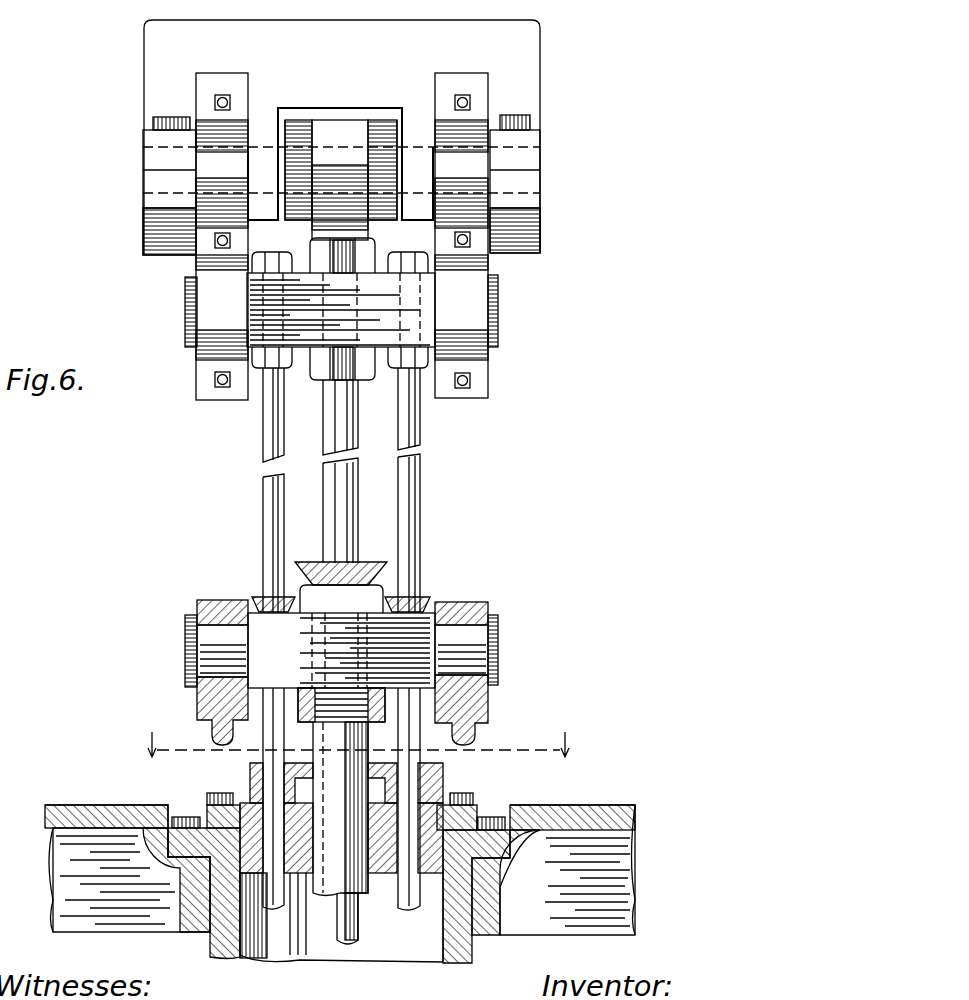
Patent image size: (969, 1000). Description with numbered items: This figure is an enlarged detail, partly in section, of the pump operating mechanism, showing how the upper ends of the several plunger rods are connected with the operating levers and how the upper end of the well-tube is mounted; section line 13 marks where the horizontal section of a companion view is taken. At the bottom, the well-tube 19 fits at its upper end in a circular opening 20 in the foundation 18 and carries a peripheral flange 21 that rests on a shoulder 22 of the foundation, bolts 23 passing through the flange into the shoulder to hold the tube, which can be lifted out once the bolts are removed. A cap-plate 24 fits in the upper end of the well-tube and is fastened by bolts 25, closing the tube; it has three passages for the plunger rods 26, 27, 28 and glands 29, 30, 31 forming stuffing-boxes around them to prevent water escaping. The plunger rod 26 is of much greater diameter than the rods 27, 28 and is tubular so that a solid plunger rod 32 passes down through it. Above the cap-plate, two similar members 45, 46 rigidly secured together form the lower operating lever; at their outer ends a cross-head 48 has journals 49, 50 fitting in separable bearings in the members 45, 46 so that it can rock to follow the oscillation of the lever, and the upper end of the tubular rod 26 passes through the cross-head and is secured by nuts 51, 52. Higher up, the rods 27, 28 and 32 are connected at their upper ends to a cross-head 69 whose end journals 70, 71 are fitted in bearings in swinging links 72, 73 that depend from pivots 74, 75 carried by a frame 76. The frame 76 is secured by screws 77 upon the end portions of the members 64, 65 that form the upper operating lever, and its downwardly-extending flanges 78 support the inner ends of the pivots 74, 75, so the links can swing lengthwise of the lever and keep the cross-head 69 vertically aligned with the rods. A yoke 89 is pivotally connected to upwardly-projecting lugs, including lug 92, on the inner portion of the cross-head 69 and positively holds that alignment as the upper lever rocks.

The section line 13- 13 is at (363, 749).
The foundation 18 is at (622, 815).
The well-tube 19 is at (423, 942).
The circular opening 20 is at (470, 935).
The peripheral flange 21 is at (488, 818).
The shoulder 22 is at (185, 870).
The bolts 23 is at (180, 817).
The cap-plate 24 is at (445, 810).
The bolts 25 is at (215, 793).
The tubular plunger rod 26 is at (352, 895).
The plunger rod 27 is at (272, 540).
The plunger rod 28 is at (418, 522).
The gland 29 is at (378, 770).
The gland 30 is at (290, 770).
The gland 31 is at (432, 770).
The solid plunger rod 32 is at (355, 505).
The lever member 45 is at (480, 710).
The lever member 46 is at (215, 707).
The cross-head 48 is at (412, 630).
The journal 49 is at (463, 634).
The journal 50 is at (215, 635).
The nut 51 is at (373, 590).
The nut 52 is at (392, 695).
The upper lever member 64 is at (527, 181).
The upper lever member 65 is at (156, 188).
The cross-head 69 is at (385, 350).
The journal 70 is at (470, 326).
The journal 71 is at (210, 312).
The swinging link 72 is at (475, 245).
The swinging link 73 is at (208, 245).
The pivot 74 is at (433, 145).
The pivot 75 is at (250, 146).
The frame 76 is at (537, 72).
The screws 77 is at (165, 124).
The downwardly-extending flange 78 is at (265, 200).
The yoke 89 is at (336, 135).
The upwardly-projecting lug 92 is at (297, 137).